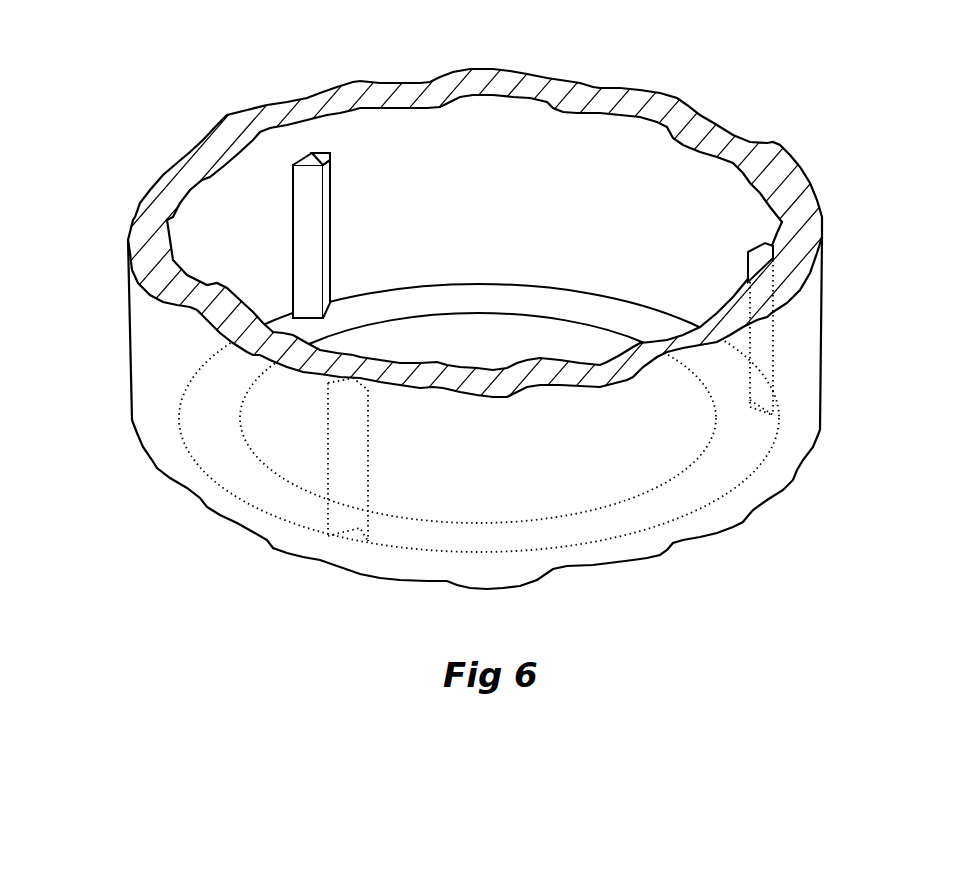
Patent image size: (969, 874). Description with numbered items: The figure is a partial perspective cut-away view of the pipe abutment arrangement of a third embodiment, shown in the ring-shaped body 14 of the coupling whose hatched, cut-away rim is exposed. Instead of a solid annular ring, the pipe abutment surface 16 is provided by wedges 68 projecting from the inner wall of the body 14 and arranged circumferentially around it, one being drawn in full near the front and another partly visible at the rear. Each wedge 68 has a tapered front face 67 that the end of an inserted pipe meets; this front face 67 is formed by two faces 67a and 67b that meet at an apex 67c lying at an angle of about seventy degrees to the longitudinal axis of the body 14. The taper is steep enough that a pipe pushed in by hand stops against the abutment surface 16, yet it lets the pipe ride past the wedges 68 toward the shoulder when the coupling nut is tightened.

The body 14 is at (447, 296).
The pipe abutment surface 16 is at (150, 247).
The front face 67 is at (310, 111).
The first face 67a is at (308, 158).
The second face 67b is at (322, 157).
The apex 67c is at (307, 149).
The wedge 68 is at (310, 174).